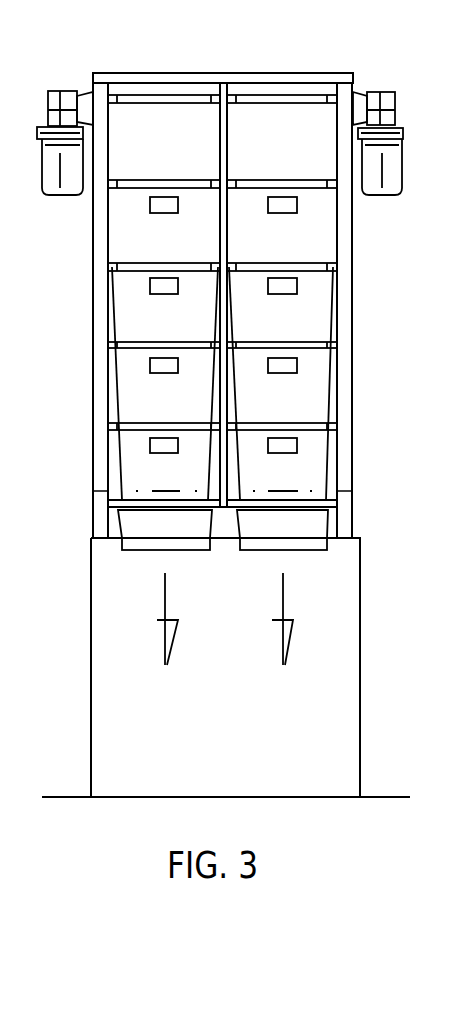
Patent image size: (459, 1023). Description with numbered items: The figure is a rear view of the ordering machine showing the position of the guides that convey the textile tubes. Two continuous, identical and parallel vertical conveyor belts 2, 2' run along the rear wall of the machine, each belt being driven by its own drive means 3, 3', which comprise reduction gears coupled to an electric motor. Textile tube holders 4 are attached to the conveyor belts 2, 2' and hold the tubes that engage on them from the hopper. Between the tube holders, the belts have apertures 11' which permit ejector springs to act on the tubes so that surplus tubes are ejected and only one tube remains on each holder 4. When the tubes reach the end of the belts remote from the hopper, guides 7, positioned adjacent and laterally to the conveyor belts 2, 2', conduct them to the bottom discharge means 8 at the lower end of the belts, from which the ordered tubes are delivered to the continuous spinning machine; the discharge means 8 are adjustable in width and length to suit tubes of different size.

The vertical conveyor belt 2 is at (164, 235).
The vertical conveyor belt 2' is at (282, 235).
The drive means 3 is at (53, 115).
The drive means 3' is at (379, 108).
The textile tube holder 4 is at (133, 268).
The guide 7 is at (120, 453).
The bottom discharge means 8 is at (135, 522).
The aperture 11' is at (164, 323).